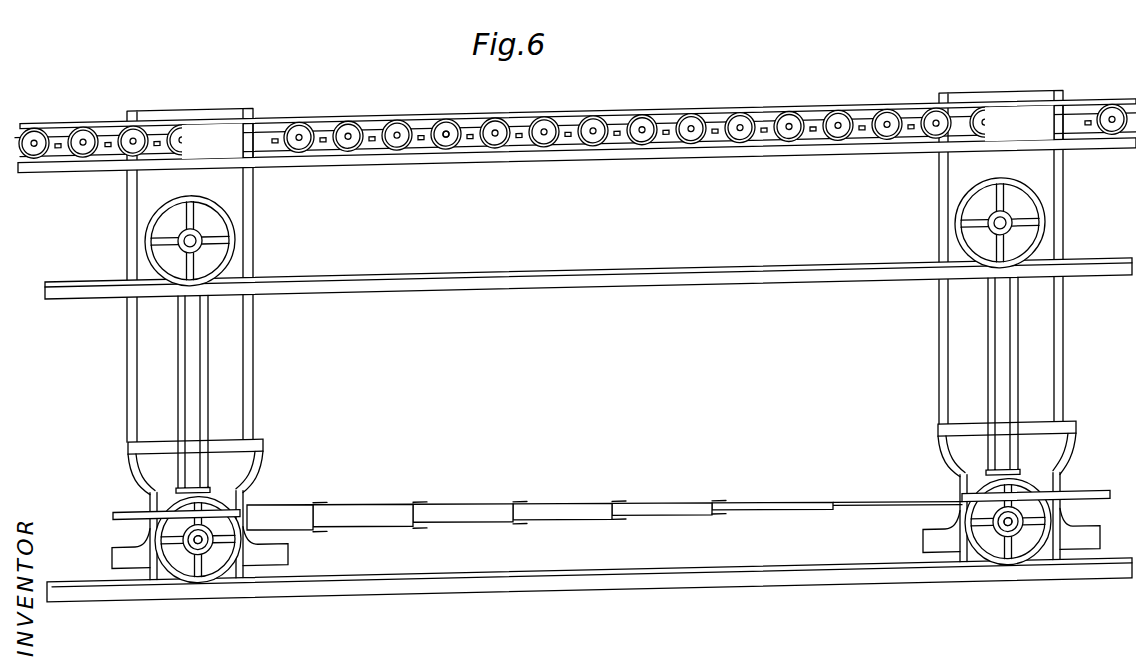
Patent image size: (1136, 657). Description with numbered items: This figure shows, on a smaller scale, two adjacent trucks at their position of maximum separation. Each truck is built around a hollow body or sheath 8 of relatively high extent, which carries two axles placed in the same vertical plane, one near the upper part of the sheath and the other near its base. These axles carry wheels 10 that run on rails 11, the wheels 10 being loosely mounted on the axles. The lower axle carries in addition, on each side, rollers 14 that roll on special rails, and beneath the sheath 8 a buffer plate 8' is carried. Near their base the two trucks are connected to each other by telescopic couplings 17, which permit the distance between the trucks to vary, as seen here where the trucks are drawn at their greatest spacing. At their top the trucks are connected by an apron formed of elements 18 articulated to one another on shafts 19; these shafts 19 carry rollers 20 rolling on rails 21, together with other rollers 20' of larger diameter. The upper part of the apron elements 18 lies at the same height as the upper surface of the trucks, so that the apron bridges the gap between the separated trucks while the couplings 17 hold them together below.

The sheath 8 is at (595, 266).
The buffer plate 8' is at (606, 540).
The wheels 10 is at (233, 245).
The rails 11 is at (378, 298).
The rollers 14 is at (210, 542).
The telescopic couplings 17 is at (388, 519).
The apron elements 18 is at (420, 143).
The shafts 19 is at (447, 143).
The rollers 20 is at (573, 153).
The rollers of larger diameter 20' is at (575, 112).
The rails 21 is at (577, 169).